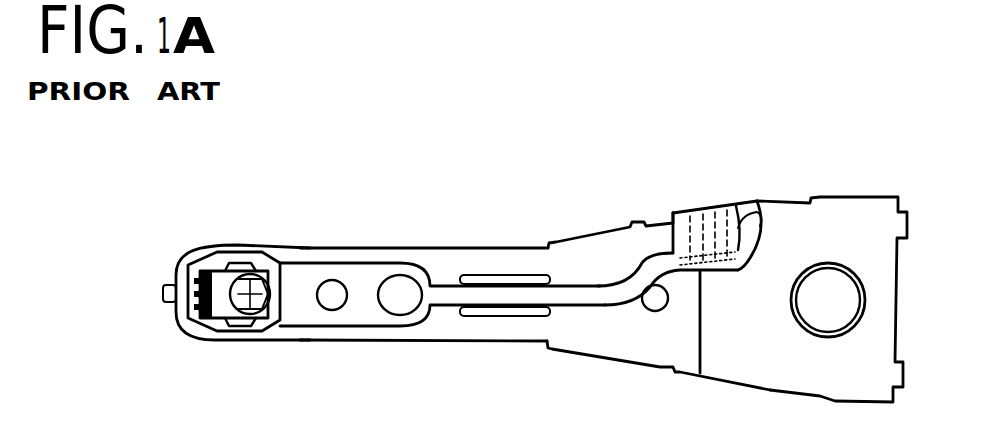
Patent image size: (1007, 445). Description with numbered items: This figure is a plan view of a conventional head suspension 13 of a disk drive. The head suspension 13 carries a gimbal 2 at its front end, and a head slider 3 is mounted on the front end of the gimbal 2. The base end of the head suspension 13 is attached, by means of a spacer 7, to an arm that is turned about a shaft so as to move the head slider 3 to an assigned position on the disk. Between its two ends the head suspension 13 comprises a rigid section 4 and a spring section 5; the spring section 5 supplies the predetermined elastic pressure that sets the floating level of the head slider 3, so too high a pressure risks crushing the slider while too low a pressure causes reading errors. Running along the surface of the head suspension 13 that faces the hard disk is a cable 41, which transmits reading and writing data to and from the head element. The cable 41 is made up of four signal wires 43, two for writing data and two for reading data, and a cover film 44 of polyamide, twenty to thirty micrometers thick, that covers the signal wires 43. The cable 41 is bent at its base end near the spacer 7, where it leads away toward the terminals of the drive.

The gimbal 2 is at (175, 281).
The head slider 3 is at (247, 250).
The rigid section 4 is at (395, 338).
The spring section 5 is at (534, 240).
The spacer 7 is at (844, 215).
The head suspension 13 is at (463, 240).
The cable 41 is at (572, 336).
The signal wires 43 is at (759, 205).
The cover film 44 is at (596, 290).